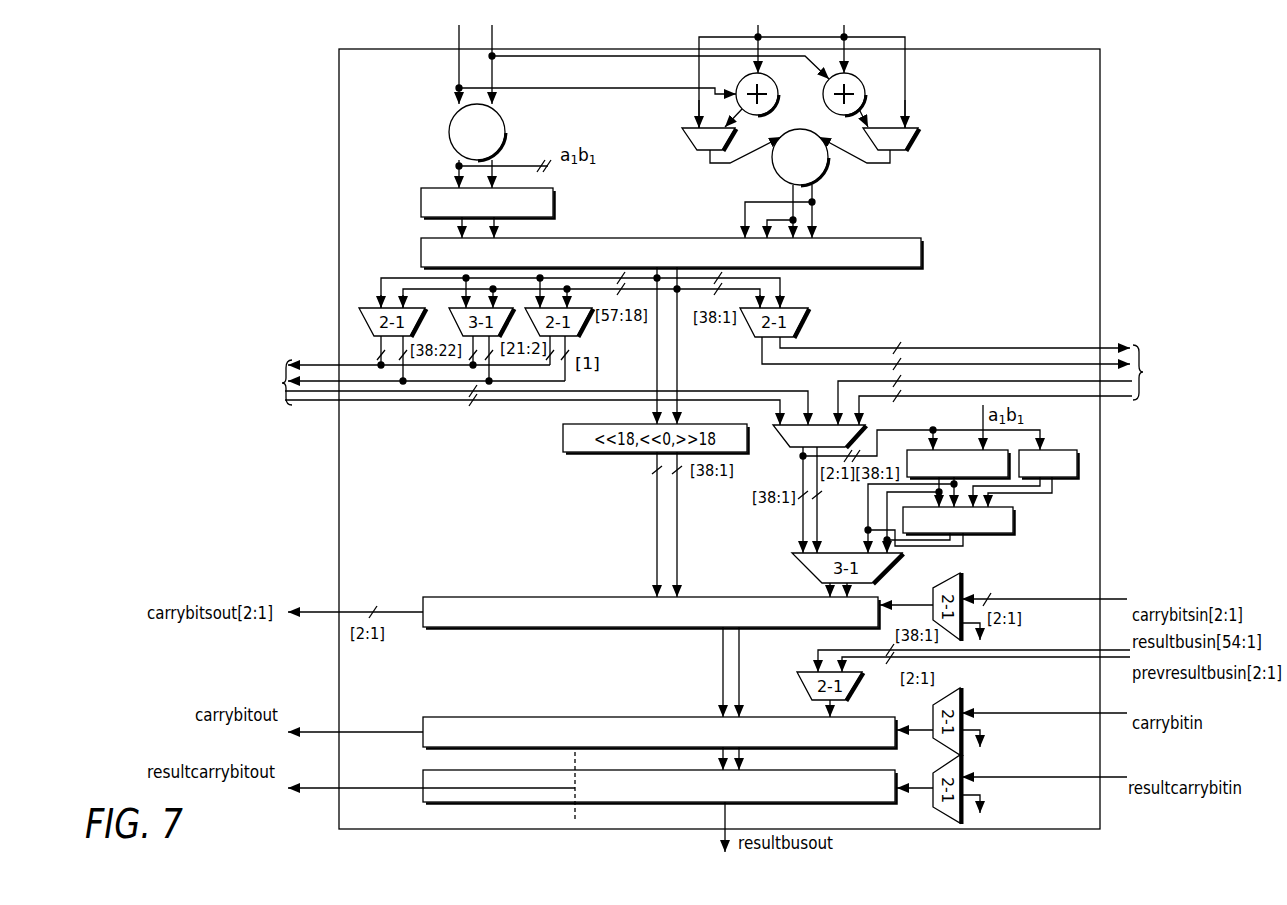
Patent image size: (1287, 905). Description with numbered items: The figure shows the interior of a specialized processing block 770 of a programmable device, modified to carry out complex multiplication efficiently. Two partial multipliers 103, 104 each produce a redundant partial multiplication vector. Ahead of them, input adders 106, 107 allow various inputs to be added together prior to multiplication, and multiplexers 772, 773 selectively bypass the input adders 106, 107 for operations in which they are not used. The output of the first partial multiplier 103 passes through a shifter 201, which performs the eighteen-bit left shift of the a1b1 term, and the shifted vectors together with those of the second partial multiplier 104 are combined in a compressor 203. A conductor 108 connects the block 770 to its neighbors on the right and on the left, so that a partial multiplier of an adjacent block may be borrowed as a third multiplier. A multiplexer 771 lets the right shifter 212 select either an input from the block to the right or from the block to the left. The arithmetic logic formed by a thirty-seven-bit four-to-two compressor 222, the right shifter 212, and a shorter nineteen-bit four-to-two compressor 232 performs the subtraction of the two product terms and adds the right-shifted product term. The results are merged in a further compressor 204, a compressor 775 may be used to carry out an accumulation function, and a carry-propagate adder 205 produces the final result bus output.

The specialized processing block 770 is at (1082, 49).
The partial multiplier 103 is at (503, 123).
The input adder 106 is at (743, 81).
The input adder 107 is at (855, 81).
The multiplexer 772 is at (687, 141).
The multiplexer 773 is at (915, 142).
The partial multiplier 104 is at (822, 182).
The shifter 201 is at (553, 205).
The compressor 203 is at (622, 238).
The conductor 108 is at (710, 377).
The multiplexer 771 is at (790, 448).
The 37-bit 4-2 compressor 222 is at (962, 450).
The right shifter 212 is at (1052, 450).
The 19-bit 4-2 compressor 232 is at (990, 533).
The compressor 204 is at (533, 597).
The compressor 775 is at (465, 717).
The carry-propagate adder 205 is at (437, 770).